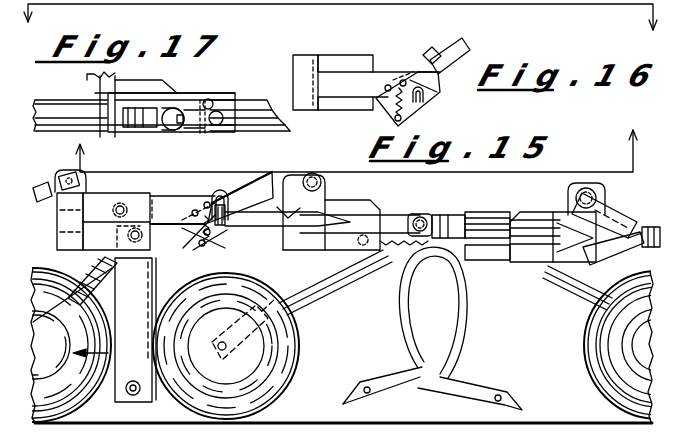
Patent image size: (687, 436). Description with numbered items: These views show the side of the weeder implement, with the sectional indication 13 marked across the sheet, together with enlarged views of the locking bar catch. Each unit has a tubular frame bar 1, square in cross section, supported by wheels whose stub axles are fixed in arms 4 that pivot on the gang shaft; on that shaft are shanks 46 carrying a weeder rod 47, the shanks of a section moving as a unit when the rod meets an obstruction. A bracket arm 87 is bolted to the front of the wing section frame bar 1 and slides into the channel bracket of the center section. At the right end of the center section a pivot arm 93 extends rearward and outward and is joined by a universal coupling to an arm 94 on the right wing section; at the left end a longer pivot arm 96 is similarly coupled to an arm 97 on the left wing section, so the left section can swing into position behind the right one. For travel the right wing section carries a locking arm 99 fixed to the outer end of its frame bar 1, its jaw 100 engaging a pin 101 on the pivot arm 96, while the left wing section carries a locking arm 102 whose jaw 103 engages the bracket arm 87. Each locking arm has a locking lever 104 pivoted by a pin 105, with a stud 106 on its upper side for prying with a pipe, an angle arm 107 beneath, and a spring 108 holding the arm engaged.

In FIG. 15, the tubular frame bar 1 is at (58, 336).
In FIG. 15, the arm 4 is at (304, 303).
In FIG. 17, the section line 13 is at (343, 32).
In FIG. 15, the section line 13 is at (358, 139).
In FIG. 15, the shank 46 is at (404, 322).
In FIG. 15, the weeder rod 47 is at (498, 395).
In FIG. 15, the bracket arm 87 is at (226, 239).
In FIG. 15, the pivot arm 93 is at (475, 197).
In FIG. 15, the arm 94 is at (385, 217).
In FIG. 17, the pivot arm 96 is at (67, 123).
In FIG. 17, the arm 97 is at (288, 125).
In FIG. 17, the locking arm 99 is at (182, 72).
In FIG. 17, the jaw 100 is at (203, 128).
In FIG. 17, the pin 101 is at (212, 112).
In FIG. 16, the locking arm 102 is at (366, 65).
In FIG. 15, the locking arm 102 is at (91, 208).
In FIG. 16, the jaw 103 is at (447, 90).
In FIG. 16, the locking lever 104 is at (486, 49).
In FIG. 15, the locking lever 104 is at (272, 176).
In FIG. 16, the pin 105 is at (387, 85).
In FIG. 15, the pin 105 is at (195, 211).
In FIG. 16, the stud 106 is at (469, 34).
In FIG. 15, the stud 106 is at (270, 174).
In FIG. 16, the angle arm 107 is at (439, 105).
In FIG. 15, the angle arm 107 is at (200, 242).
In FIG. 15, the spring 108 is at (200, 238).